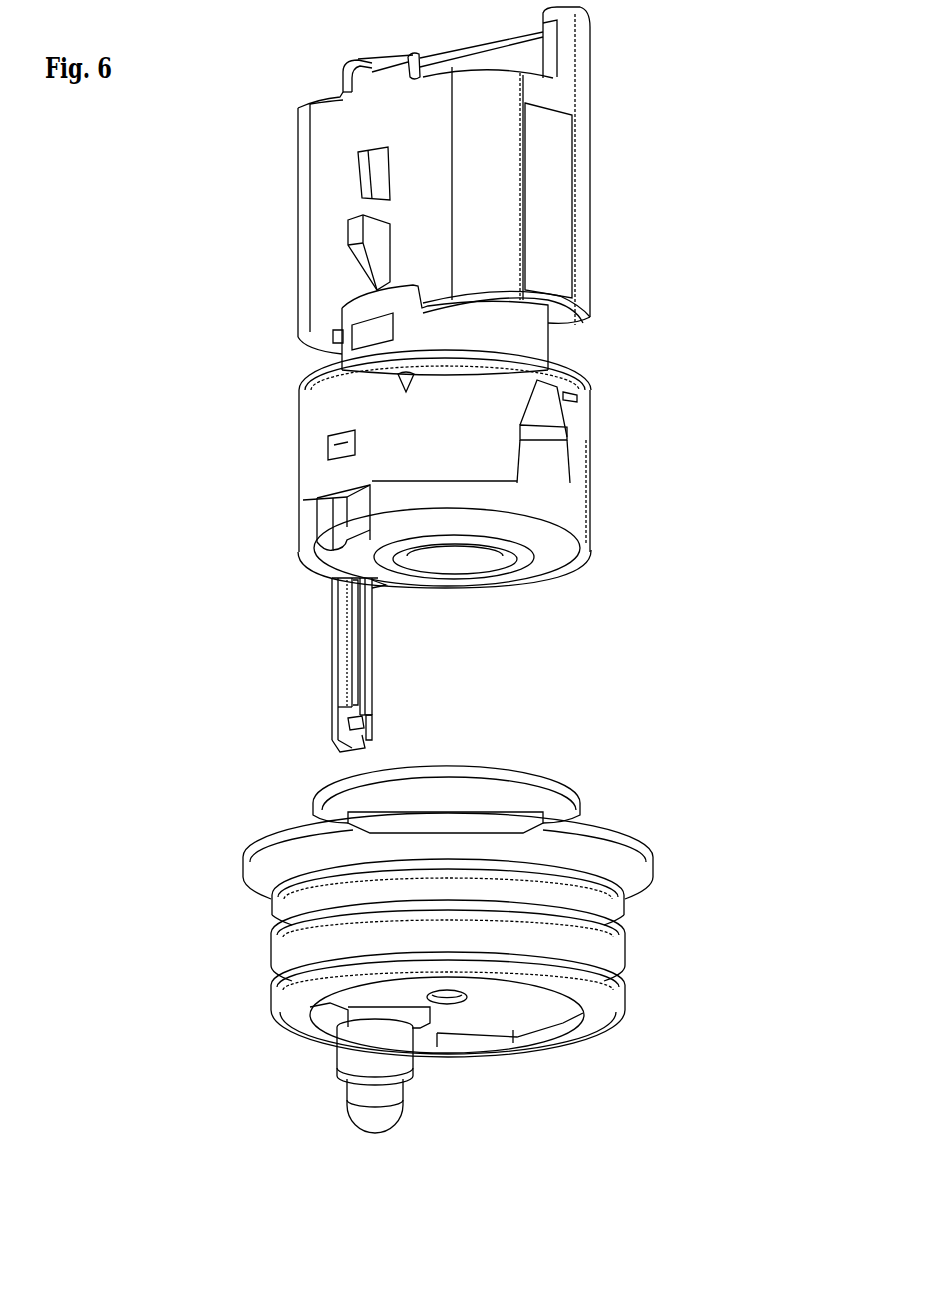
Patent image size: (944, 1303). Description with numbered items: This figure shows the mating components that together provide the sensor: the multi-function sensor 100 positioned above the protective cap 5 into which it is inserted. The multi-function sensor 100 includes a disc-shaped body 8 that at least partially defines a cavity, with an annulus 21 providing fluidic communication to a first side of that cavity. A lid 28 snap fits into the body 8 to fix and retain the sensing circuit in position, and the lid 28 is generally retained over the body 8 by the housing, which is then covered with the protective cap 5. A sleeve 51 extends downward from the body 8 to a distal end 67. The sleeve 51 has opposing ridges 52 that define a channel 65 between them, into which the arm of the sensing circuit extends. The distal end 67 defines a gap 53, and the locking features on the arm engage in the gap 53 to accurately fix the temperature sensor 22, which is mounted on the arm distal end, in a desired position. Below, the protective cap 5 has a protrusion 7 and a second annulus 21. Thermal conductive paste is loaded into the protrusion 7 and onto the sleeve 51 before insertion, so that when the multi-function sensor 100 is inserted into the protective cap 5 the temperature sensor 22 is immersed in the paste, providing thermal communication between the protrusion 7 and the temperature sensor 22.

The multi-function sensor 100 is at (720, 165).
The body 8 is at (478, 408).
The lid 28 is at (425, 510).
The annulus 21 is at (462, 573).
The sleeve 51 is at (340, 620).
The opposing ridges 52 is at (373, 628).
The channel 65 is at (358, 678).
The temperature sensor 22 is at (352, 722).
The gap 53 is at (376, 725).
The distal end 67 is at (340, 752).
The protective cap 5 is at (720, 843).
The protrusion 7 is at (388, 1120).